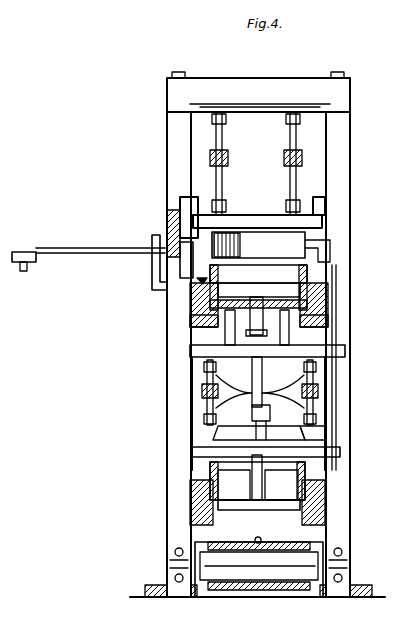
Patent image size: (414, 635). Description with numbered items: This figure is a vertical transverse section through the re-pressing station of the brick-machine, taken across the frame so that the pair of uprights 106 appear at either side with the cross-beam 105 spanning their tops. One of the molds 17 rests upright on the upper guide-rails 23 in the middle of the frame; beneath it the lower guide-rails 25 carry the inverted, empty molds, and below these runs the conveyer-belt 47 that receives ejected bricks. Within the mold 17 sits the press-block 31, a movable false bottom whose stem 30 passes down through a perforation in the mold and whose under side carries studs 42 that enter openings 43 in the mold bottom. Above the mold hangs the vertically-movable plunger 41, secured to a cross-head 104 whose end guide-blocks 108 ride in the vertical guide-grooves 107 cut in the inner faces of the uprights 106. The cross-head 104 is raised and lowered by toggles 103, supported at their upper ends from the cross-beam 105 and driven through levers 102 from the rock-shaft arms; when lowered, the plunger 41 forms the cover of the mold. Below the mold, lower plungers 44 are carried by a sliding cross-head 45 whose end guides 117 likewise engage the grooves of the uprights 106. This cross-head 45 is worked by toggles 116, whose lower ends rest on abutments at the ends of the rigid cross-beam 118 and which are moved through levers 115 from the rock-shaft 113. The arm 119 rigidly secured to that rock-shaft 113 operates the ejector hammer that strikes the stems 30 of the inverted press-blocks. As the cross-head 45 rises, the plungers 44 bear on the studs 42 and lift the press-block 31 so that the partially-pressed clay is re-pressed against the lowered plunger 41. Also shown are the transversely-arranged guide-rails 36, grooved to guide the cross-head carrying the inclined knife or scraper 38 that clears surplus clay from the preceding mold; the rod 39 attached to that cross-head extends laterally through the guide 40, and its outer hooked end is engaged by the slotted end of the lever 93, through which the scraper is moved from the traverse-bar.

The cross-beam 105 is at (258, 92).
The uprights 106 is at (167, 160).
The toggles 103 is at (224, 135).
The levers 102 is at (228, 157).
The cross-head 104 is at (240, 224).
The vertical guide-grooves 107 is at (183, 200).
The guide-blocks 108 is at (178, 213).
The plunger 41 is at (258, 245).
The guide-rails 36 is at (320, 250).
The mold 17 is at (360, 472).
The press-block 31 is at (259, 397).
The studs 42 is at (190, 300).
The upper guide-rails 23 is at (192, 318).
The stem 30 is at (256, 350).
The plungers 44 is at (200, 350).
The guides 117 is at (192, 358).
The levers 115 is at (203, 390).
The toggles 116 is at (260, 391).
The cross-head 45 is at (276, 368).
The arm 119 is at (276, 422).
The rock-shaft 113 is at (259, 425).
The cross-beam 118 is at (311, 436).
The openings 43 is at (230, 462).
The lower guide-rails 25 is at (195, 501).
The conveyer-belt 47 is at (259, 567).
The rod 39 is at (100, 239).
The lever 93 is at (33, 264).
The guide 40 is at (152, 268).
The knife 38 is at (200, 280).